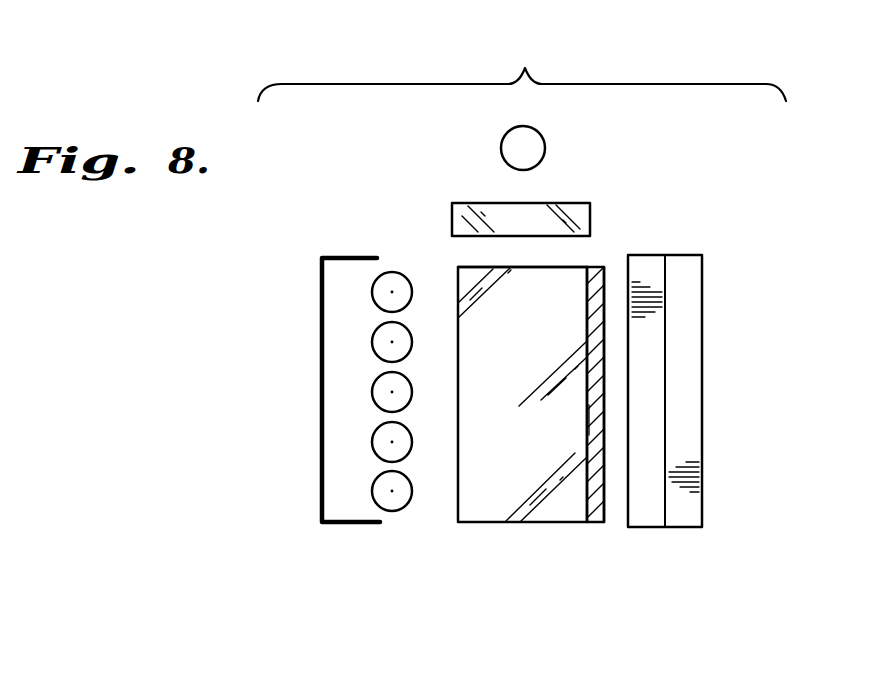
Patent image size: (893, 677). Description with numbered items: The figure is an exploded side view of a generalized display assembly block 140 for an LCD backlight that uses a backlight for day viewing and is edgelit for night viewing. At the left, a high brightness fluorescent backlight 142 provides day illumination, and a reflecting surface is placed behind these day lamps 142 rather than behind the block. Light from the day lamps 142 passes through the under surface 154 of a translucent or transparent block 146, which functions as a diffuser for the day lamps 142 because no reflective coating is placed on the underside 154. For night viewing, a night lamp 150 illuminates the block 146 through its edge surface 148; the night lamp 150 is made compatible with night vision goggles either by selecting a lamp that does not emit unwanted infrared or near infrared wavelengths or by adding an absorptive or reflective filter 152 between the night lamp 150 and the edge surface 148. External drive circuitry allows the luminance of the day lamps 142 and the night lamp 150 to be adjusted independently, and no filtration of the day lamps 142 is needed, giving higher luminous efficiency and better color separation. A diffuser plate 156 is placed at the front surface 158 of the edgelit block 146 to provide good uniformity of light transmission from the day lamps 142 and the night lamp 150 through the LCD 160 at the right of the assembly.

The display assembly block 140 is at (226, 383).
The high brightness fluorescent backlight 142 is at (407, 530).
The translucent or transparent block 146 is at (505, 531).
The edge surface 148 is at (478, 267).
The night lamp 150 is at (497, 142).
The filter 152 is at (598, 212).
The under surface 154 is at (568, 523).
The diffuser plate 156 is at (609, 531).
The front surface 158 is at (593, 412).
The LCD 160 is at (708, 342).